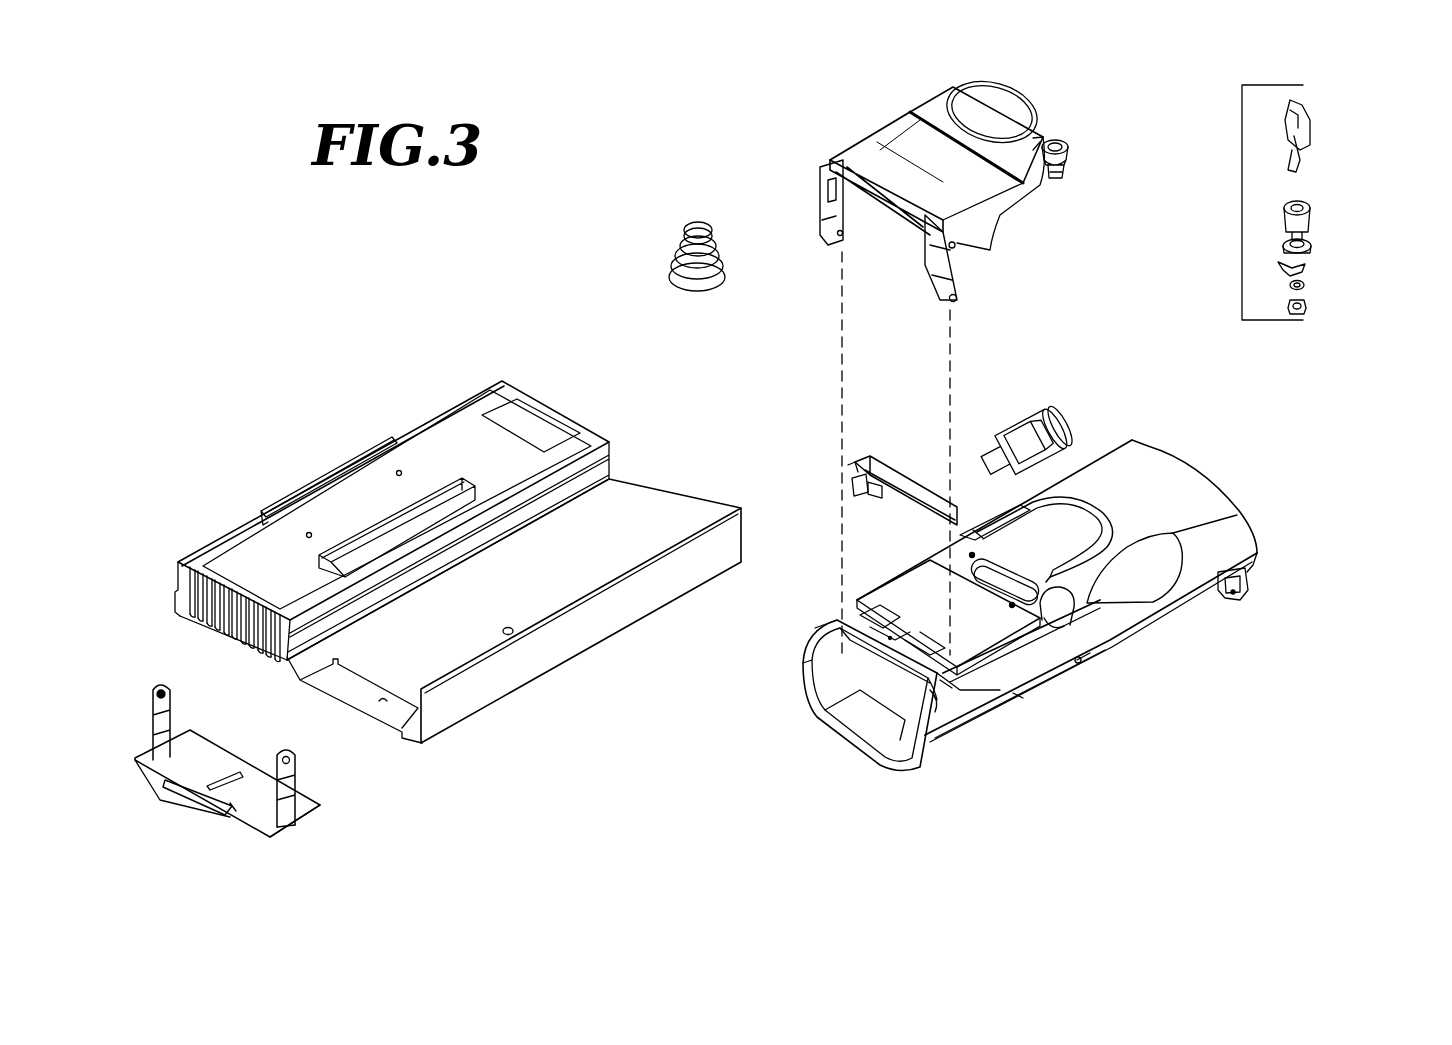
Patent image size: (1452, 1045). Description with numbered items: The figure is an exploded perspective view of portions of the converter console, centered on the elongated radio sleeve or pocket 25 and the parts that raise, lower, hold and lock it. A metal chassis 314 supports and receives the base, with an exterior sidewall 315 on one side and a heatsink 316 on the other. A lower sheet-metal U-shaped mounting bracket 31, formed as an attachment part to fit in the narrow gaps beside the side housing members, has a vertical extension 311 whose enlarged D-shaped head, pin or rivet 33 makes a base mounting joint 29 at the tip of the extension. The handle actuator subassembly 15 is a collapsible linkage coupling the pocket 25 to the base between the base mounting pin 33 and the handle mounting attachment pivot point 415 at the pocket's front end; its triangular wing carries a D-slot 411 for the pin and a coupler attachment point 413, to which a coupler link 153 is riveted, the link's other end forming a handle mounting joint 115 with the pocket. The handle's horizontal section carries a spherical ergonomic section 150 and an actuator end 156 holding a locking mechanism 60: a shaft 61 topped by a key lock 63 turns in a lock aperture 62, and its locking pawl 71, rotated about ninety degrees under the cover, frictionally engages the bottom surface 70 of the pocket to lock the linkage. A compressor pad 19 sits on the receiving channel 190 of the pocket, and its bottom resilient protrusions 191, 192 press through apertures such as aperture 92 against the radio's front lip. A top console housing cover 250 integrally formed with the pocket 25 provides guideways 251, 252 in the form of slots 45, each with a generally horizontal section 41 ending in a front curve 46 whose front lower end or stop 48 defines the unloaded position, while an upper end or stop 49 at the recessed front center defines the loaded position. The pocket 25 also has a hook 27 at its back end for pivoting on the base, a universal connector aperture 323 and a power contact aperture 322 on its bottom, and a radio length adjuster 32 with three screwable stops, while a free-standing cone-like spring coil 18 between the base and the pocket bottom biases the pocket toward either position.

The handle actuator subassembly 15 is at (935, 110).
The cone-like spring coil 18 is at (693, 222).
The compressor pad 19 is at (852, 475).
The radio sleeve or pocket 25 is at (1013, 695).
The hook 27 is at (1233, 592).
The base mounting joint 29 is at (292, 762).
The lower sheet-metal U-shaped mounting bracket 31 is at (255, 803).
The radio length adjuster 32 is at (1057, 408).
The enlarged head, pin, or rivet 33 is at (170, 693).
The generally horizontal section 41 is at (1080, 662).
The slot 45 is at (937, 692).
The front curve 46 is at (945, 682).
The front lower end or stop 48 is at (815, 628).
The upper end or stop 49 is at (968, 536).
The locking mechanism 60 is at (1242, 205).
The shaft 61 is at (1308, 233).
The lock aperture 62 is at (1060, 172).
The key lock 63 is at (1306, 208).
The bottom surface of the pocket 70 is at (1080, 612).
The locking pawl 71 is at (1305, 270).
The aperture 92 is at (878, 642).
The handle mounting joint 115 is at (848, 213).
The spherical ergonomic section 150 is at (995, 105).
The coupler link 153 is at (828, 240).
The actuator end of the handle 156 is at (1037, 138).
The receiving channel 190 is at (860, 612).
The bottom resilient protrusion 191 is at (852, 492).
The bottom resilient protrusion 192 is at (872, 495).
The top console housing cover 250 is at (1160, 480).
The guideway 251 is at (937, 705).
The guideway 252 is at (800, 667).
The vertical extension 311 is at (295, 810).
The metal chassis 314 is at (611, 509).
The exterior sidewall 315 is at (459, 696).
The heatsink 316 is at (180, 576).
The power contact aperture 322 is at (1150, 568).
The universal connector aperture 323 is at (845, 708).
The base mounting hole or D-slot 411 is at (957, 245).
The coupler attachment point 413 is at (958, 300).
The handle mounting attachment pivot point 415 is at (1017, 693).